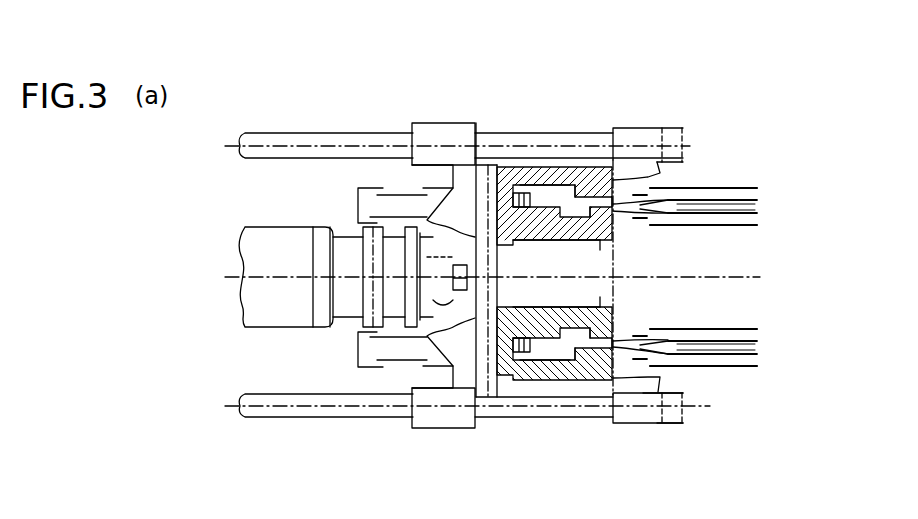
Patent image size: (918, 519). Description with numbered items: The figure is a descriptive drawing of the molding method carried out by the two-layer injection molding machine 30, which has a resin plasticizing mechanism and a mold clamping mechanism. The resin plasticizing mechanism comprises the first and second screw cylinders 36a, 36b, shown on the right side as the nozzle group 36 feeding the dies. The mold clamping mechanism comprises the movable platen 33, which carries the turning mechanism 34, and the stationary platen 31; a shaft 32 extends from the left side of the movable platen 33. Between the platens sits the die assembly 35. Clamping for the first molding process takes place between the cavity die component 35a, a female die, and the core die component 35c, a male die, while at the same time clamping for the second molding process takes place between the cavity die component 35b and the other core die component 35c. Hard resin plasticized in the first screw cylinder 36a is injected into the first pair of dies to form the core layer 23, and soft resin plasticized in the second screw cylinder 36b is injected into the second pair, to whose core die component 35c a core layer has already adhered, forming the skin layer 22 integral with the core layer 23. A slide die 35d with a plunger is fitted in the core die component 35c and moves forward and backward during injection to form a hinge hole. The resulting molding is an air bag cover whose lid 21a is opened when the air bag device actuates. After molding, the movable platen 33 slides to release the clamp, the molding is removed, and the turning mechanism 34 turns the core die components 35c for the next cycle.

The two-layer injection molding machine 30 is at (465, 92).
The stationary platen 31 is at (652, 420).
The shaft 32 is at (283, 308).
The movable platen 33 is at (452, 424).
The turning mechanism 34 is at (500, 416).
The injector body 35 is at (674, 50).
The cavity die component 35a is at (586, 162).
The cavity die component 35b is at (586, 415).
The core die component 35c is at (513, 182).
The slide die 35d is at (542, 177).
The nozzles 36 is at (834, 205).
The first screw cylinder 36a is at (750, 208).
The second screw cylinder 36b is at (750, 347).
The lid 21a is at (555, 380).
The skin layer 22 is at (573, 318).
The core layer 23 is at (553, 306).